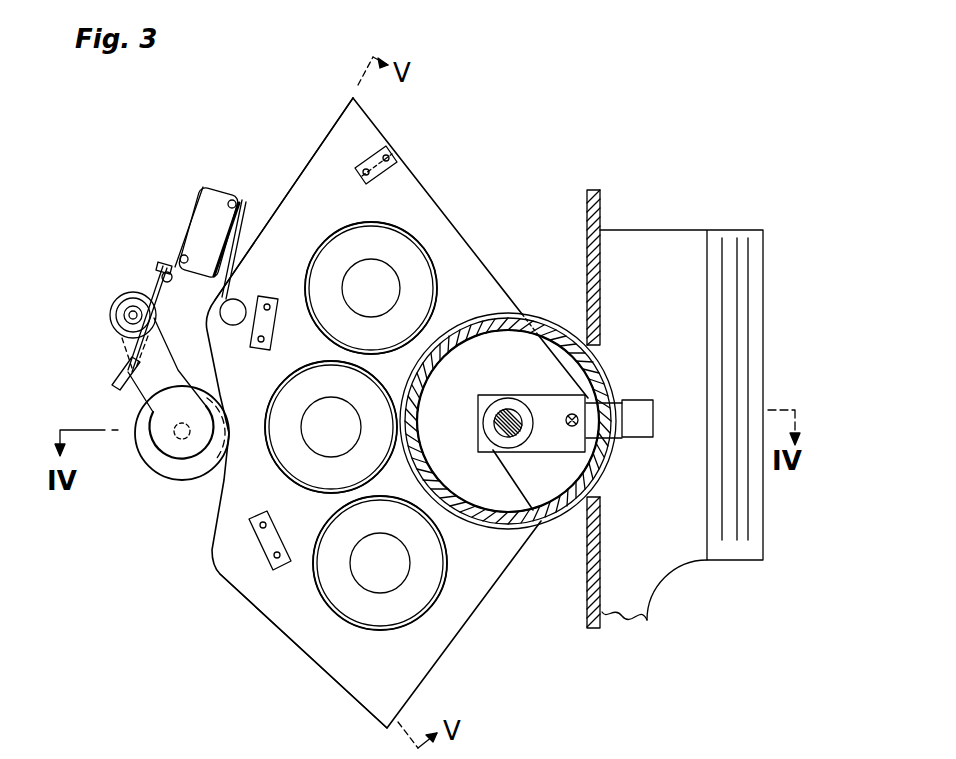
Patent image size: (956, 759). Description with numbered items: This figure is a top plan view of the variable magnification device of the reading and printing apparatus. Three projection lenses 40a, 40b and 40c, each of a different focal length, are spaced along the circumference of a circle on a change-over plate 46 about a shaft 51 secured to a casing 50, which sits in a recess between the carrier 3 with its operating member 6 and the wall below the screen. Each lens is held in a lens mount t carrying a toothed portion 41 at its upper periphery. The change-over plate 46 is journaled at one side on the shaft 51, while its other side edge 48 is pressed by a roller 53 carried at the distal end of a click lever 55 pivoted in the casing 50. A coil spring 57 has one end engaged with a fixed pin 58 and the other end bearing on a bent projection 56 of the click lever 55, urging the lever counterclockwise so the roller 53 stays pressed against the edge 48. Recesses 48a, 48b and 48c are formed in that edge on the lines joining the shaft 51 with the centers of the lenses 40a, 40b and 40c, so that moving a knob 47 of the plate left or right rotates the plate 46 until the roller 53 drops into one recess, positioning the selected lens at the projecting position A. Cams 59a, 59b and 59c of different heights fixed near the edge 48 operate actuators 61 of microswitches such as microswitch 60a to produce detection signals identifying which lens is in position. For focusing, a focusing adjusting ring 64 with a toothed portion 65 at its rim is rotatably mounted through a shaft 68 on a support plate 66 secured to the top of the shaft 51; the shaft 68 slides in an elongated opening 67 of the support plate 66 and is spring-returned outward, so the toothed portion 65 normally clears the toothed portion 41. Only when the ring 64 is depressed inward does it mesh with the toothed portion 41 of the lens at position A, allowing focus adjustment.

The carrier 3 is at (627, 600).
The operating member 6 is at (730, 553).
The projection lens 40a is at (325, 447).
The projection lens 40b is at (362, 270).
The projection lens 40c is at (380, 583).
The toothed portion 41 is at (400, 223).
The change-over plate 46 is at (455, 262).
The knob 47 is at (645, 400).
The other side edge 48 is at (203, 350).
The recess 48a is at (222, 443).
The recess 48b is at (290, 223).
The recess 48c is at (297, 625).
The casing 50 is at (600, 210).
The shaft 51 is at (578, 426).
The roller 53 is at (157, 455).
The click lever 55 is at (163, 425).
The bent projection 56 is at (135, 390).
The coil spring 57 is at (123, 292).
The fixed pin 58 is at (173, 263).
The cam 59a is at (257, 307).
The cam 59b is at (370, 150).
The cam 59c is at (253, 543).
The microswitch 60a is at (193, 212).
The actuator 61 is at (250, 237).
The focusing adjusting ring 64 is at (457, 340).
The toothed portion 65 is at (480, 313).
The support plate 66 is at (547, 438).
The elongated opening 67 is at (490, 427).
The shaft 68 is at (497, 447).
The lens mount t is at (420, 240).
The projecting position A is at (268, 471).